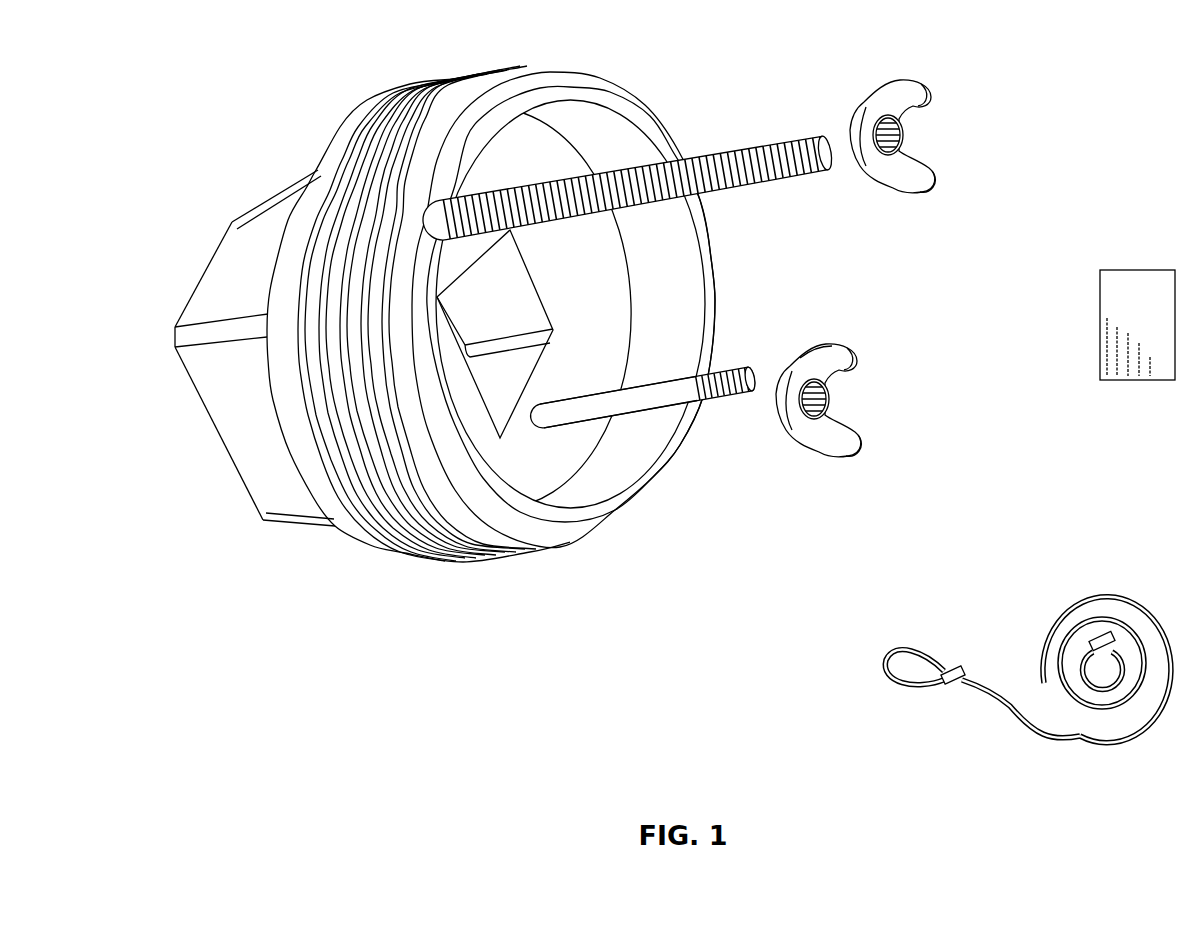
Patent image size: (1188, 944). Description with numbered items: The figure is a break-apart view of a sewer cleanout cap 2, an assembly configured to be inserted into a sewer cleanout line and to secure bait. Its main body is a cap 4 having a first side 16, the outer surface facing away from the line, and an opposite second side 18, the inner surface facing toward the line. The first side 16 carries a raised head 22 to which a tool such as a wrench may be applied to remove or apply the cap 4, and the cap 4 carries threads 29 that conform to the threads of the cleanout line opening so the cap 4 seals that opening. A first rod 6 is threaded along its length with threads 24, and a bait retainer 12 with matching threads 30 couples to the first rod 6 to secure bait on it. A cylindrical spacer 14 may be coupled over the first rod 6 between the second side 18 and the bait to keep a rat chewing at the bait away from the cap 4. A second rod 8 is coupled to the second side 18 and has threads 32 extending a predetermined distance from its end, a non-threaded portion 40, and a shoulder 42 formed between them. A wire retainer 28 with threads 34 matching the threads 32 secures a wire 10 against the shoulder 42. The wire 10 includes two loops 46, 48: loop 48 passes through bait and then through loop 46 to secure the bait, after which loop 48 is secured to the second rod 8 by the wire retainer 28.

The sewer cleanout cap 2 is at (556, 578).
The cap 4 is at (407, 556).
The first rod 6 is at (745, 157).
The second rod 8 is at (678, 390).
The wire 10 is at (996, 703).
The bait retainer 12 is at (915, 180).
The spacer 14 is at (1137, 268).
The first side 16 is at (222, 438).
The second side 18 is at (567, 263).
The raised head 22 is at (243, 268).
The threads 24 is at (621, 163).
The wire retainer 28 is at (827, 350).
The threads 29 is at (407, 140).
The threads 30 is at (903, 135).
The threads 32 is at (737, 397).
The threads 34 is at (826, 395).
The non-threaded portion 40 is at (613, 406).
The shoulder 42 is at (709, 394).
The loop 46 is at (897, 685).
The loop 48 is at (1083, 684).